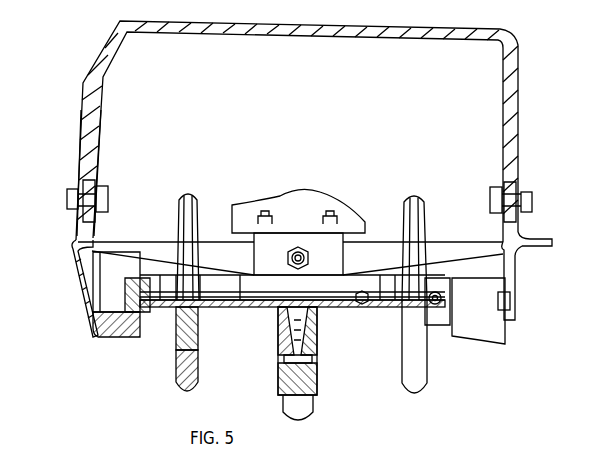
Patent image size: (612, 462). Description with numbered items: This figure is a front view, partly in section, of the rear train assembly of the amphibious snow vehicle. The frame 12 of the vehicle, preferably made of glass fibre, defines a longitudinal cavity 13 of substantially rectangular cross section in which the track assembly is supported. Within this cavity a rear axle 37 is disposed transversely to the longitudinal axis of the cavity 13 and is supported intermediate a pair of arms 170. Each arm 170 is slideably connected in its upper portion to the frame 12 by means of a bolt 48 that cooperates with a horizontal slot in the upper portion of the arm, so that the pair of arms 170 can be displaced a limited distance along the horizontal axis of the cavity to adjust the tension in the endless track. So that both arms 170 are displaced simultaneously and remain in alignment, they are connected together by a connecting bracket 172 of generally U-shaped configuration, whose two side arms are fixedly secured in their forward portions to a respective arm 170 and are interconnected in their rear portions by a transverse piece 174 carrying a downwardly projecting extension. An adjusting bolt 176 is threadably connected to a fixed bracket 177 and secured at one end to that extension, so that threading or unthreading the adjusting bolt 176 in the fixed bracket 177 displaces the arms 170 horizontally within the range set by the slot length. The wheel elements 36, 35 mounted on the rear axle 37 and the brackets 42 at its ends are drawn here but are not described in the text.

The longitudinal cavity 13 is at (420, 72).
The frame 12 is at (80, 160).
The bolt 48 is at (67, 199).
The arm 170 is at (78, 258).
The transverse piece 174 is at (213, 250).
The connecting bracket 172 is at (434, 247).
The fixed bracket 177 is at (286, 243).
The adjusting bolt 176 is at (312, 255).
The rear axle 37 is at (218, 304).
The bearing bracket 42 is at (109, 338).
The disc wheel 36 is at (192, 346).
The caster wheel 35 is at (320, 358).